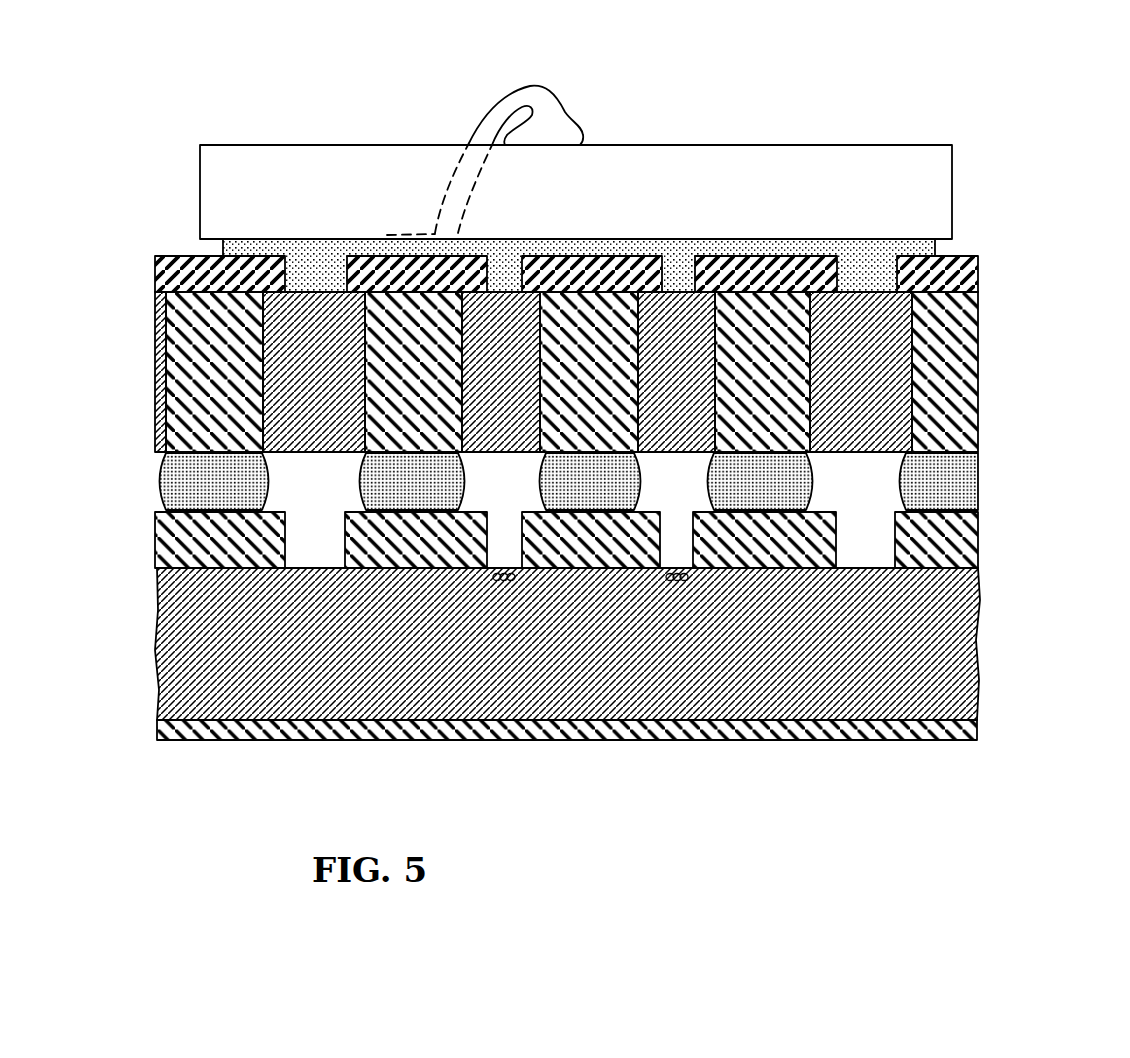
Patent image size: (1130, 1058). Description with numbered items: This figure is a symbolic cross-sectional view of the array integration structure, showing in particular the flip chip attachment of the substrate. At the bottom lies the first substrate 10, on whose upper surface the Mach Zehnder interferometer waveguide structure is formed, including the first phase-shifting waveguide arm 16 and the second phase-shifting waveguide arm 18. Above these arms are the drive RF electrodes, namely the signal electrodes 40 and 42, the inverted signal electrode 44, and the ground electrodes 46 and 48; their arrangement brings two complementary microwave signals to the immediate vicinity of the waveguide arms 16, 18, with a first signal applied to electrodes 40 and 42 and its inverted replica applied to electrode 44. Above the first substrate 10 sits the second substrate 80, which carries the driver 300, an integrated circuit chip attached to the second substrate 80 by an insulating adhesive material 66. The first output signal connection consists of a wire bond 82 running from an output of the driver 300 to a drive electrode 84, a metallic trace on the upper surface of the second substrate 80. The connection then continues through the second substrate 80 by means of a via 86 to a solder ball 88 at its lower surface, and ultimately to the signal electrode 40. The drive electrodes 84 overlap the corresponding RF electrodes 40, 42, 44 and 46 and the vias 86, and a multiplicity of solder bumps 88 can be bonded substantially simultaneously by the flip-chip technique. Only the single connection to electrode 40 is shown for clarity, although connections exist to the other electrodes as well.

The driver 300 is at (853, 160).
The wire bond 82 is at (477, 133).
The drive electrode 84 is at (363, 259).
The insulating adhesive material 66 is at (942, 246).
The second substrate 80 is at (584, 372).
The via 86 is at (368, 392).
The solder ball 88 is at (467, 490).
The ground electrode 46 is at (157, 543).
The substrate 10 is at (977, 689).
The ground electrode 48 is at (243, 742).
The signal electrode 40 is at (425, 548).
The inverted signal electrode 44 is at (612, 550).
The signal electrode 42 is at (790, 550).
The first phase-shifting waveguide arm 16 is at (504, 581).
The second phase-shifting waveguide arm 18 is at (679, 581).